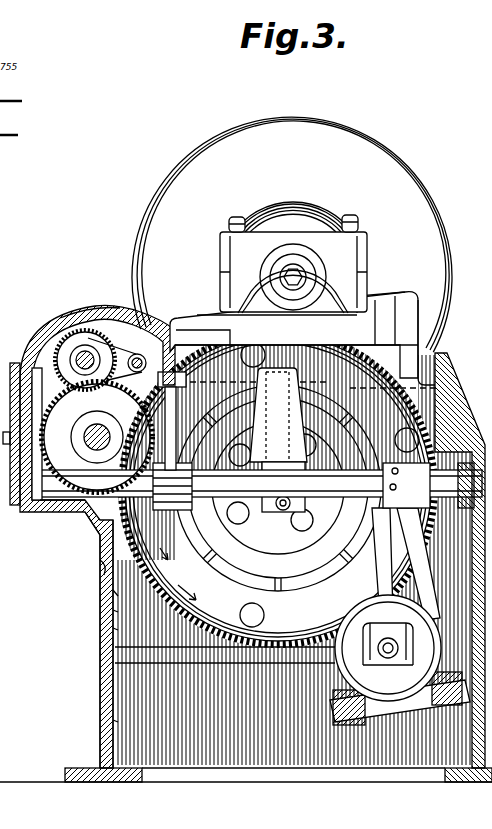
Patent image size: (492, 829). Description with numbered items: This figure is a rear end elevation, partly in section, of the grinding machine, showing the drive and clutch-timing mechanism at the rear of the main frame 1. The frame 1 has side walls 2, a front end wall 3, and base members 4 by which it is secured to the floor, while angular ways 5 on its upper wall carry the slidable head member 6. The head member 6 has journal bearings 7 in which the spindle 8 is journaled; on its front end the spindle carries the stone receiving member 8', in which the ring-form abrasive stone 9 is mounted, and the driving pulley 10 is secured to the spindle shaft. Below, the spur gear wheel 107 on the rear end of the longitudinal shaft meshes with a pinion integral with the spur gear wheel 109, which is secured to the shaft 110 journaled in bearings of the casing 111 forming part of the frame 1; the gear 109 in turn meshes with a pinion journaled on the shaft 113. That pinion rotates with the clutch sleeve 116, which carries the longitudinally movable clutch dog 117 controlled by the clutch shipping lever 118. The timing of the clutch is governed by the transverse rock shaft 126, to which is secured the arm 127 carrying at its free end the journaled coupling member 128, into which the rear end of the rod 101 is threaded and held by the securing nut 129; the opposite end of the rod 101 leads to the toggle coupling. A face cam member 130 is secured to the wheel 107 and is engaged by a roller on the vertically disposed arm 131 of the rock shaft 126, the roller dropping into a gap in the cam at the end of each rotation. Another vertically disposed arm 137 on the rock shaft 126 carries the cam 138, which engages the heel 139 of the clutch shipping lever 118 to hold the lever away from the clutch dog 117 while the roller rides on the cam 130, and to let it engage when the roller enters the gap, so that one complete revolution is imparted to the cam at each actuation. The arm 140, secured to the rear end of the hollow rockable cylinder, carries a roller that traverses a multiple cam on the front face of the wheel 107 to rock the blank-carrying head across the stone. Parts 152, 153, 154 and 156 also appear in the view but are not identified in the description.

The main frame 1 is at (89, 644).
The side walls 2 is at (102, 683).
The front end wall 3 is at (100, 722).
The base members 4 is at (82, 768).
The angular ways 5 is at (443, 362).
The head member 6 is at (449, 290).
The journal bearings 7 is at (374, 242).
The spindle 8 is at (237, 485).
The stone receiving member 8' is at (292, 234).
The abrasive stone 9 is at (25, 452).
The driving pulley 10 is at (343, 207).
The rod 101 is at (388, 648).
The spur gear wheel 107 is at (106, 593).
The spur gear wheel 109 is at (36, 486).
The shaft 110 is at (78, 522).
The casing 111 is at (98, 552).
The shaft 113 is at (87, 516).
The clutch sleeve 116 is at (66, 333).
The clutch dog 117 is at (95, 313).
The clutch shipping lever 118 is at (169, 312).
The rock shaft 126 is at (60, 505).
The arm 127 is at (281, 488).
The coupling member 128 is at (115, 647).
The securing nut 129 is at (115, 663).
The face cam member 130 is at (106, 612).
The vertically disposed arm 131 is at (106, 628).
The vertically disposed arm 137 is at (106, 575).
The cam 138 is at (258, 380).
The heel 139 is at (236, 300).
The arm 140 is at (330, 611).
The bracket arm 152 is at (407, 343).
The bracket extension 153 is at (433, 347).
The rim ring 154 is at (277, 583).
The gear hub 156 is at (343, 533).